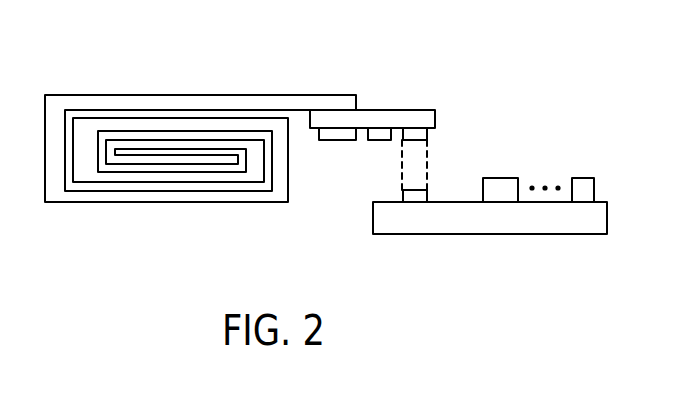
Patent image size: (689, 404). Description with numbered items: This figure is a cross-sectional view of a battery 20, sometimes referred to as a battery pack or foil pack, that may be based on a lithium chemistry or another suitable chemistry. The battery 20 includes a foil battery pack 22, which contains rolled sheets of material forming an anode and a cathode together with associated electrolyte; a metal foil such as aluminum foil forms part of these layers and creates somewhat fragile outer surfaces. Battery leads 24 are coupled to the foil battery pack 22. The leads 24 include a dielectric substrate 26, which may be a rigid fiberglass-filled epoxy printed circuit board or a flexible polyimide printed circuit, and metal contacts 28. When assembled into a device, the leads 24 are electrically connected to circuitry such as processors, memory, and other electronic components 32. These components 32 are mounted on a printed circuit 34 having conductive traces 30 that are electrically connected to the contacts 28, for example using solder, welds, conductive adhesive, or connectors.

The battery 20 is at (362, 51).
The foil battery pack 22 is at (287, 225).
The battery leads 24 is at (397, 105).
The dielectric substrate 26 is at (435, 123).
The metal contacts 28 is at (417, 141).
The conductive traces 30 is at (417, 194).
The electronic components 32 is at (580, 185).
The printed circuit 34 is at (478, 218).